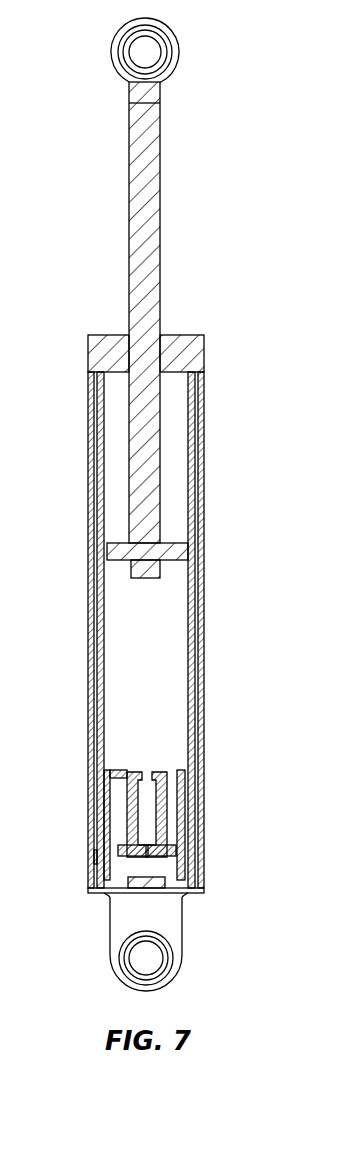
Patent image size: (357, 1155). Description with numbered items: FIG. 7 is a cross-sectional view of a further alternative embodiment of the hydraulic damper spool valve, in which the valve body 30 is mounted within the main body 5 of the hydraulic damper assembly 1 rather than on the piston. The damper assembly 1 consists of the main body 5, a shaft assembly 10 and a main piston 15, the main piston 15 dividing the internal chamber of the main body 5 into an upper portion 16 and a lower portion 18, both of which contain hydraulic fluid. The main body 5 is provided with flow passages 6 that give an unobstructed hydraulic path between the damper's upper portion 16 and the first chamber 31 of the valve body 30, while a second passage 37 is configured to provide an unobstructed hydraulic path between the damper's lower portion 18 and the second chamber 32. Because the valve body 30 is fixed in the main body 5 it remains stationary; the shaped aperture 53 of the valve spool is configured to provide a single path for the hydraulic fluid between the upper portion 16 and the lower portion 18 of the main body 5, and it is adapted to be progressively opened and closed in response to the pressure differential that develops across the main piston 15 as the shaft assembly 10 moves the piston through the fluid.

The hydraulic damper assembly 1 is at (262, 662).
The main body 5 is at (204, 752).
The flow passages 6 is at (195, 460).
The shaft assembly 10 is at (160, 205).
The main piston 15 is at (188, 548).
The upper portion 16 is at (175, 418).
The lower portion 18 is at (163, 687).
The valve body 30 is at (180, 820).
The first chamber 31 is at (186, 865).
The second chamber 32 is at (170, 790).
The second passage 37 is at (120, 770).
The shaped aperture 53 is at (88, 856).